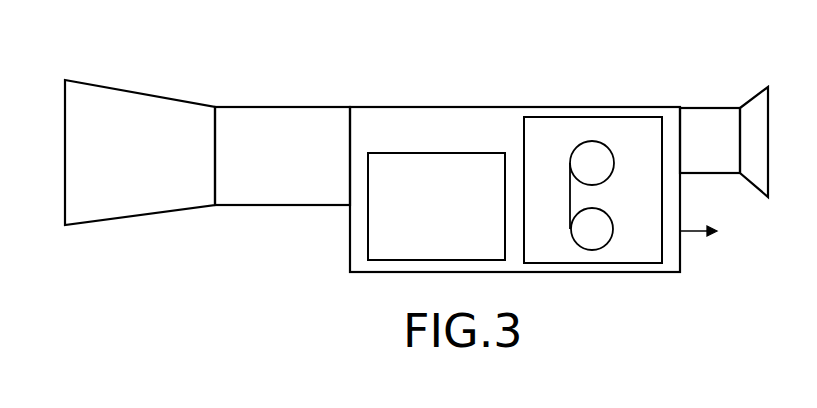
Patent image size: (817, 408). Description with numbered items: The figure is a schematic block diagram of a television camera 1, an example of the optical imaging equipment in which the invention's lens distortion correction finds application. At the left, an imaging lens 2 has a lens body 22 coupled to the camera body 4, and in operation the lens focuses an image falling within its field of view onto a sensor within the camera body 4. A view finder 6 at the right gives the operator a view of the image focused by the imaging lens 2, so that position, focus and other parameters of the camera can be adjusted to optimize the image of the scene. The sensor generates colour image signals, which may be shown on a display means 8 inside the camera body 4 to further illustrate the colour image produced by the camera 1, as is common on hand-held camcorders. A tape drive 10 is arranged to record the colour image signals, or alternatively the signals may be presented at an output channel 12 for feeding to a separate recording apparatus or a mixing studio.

The television camera 1 is at (245, 236).
The imaging lens 2 is at (127, 90).
The lens body 22 is at (253, 142).
The camera body 4 is at (374, 142).
The display means 8 is at (391, 185).
The tape drive 10 is at (562, 151).
The view finder 6 is at (748, 92).
The output channel 12 is at (716, 238).